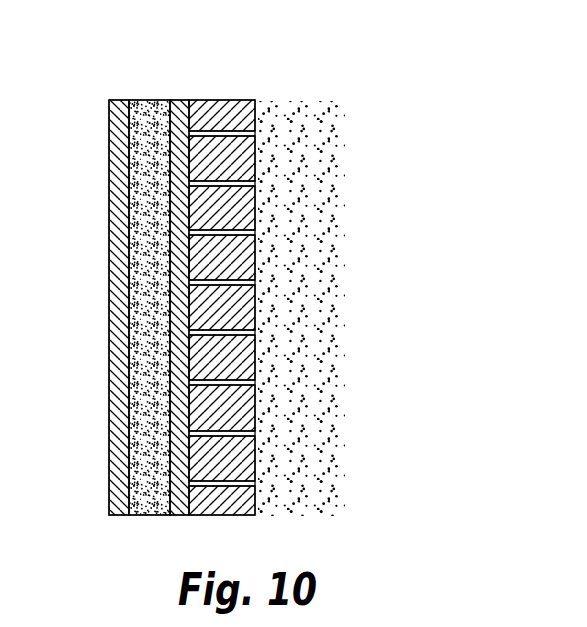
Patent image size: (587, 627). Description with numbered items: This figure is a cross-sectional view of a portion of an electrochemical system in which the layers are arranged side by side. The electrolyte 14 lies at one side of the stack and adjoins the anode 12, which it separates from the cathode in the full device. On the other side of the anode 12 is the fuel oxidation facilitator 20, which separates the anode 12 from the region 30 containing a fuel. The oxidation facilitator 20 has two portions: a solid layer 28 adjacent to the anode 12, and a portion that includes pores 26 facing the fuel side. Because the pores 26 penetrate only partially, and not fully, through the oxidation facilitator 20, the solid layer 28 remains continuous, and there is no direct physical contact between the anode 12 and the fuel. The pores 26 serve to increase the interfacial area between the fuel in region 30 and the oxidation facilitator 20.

The electrolyte 14 is at (112, 100).
The anode 12 is at (153, 100).
The solid layer 28 is at (181, 100).
The fuel oxidation facilitator 20 is at (215, 97).
The pores 26 is at (210, 434).
The region containing a fuel 30 is at (343, 94).